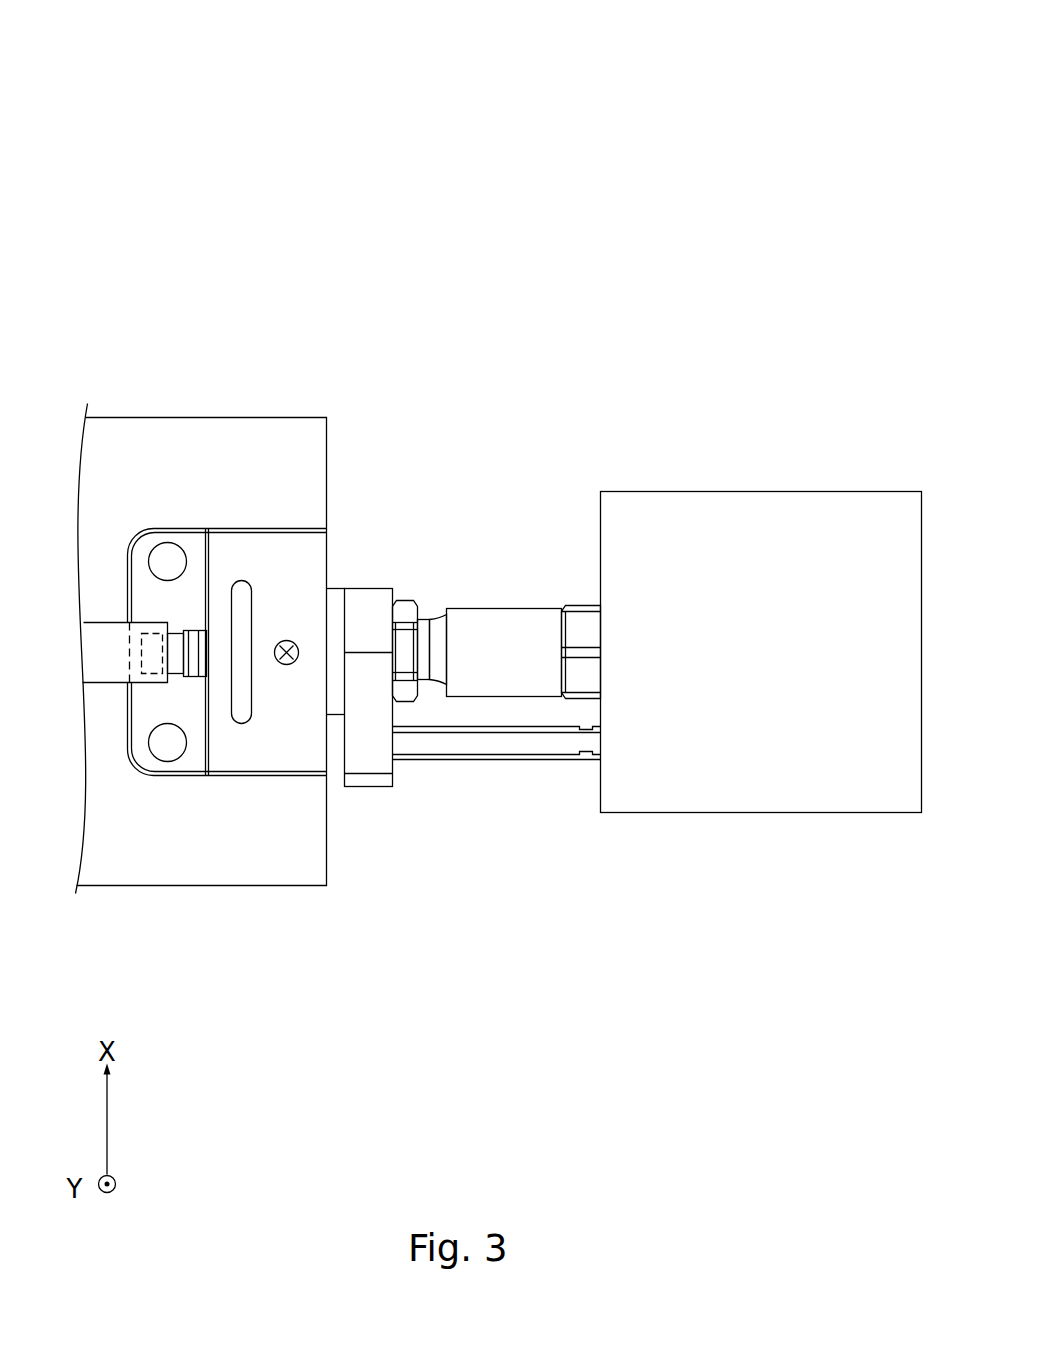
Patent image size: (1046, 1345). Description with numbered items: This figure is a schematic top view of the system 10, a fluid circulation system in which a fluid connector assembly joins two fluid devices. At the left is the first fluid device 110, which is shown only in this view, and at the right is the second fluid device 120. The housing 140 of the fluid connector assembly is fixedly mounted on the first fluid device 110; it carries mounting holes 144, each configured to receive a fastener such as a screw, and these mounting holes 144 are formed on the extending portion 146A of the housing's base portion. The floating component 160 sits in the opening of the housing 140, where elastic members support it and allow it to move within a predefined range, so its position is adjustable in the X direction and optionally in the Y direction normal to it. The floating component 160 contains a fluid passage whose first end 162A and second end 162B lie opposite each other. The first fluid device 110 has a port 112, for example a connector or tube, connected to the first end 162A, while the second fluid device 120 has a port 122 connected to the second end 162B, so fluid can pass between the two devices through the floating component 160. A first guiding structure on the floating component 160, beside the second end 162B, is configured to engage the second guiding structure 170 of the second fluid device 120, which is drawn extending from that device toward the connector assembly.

The system 10 is at (119, 49).
The first fluid device 110 is at (215, 872).
The port 112 is at (88, 655).
The second fluid device 120 is at (767, 806).
The port 122 is at (507, 616).
The housing 140 is at (278, 765).
The mounting holes 144 is at (153, 772).
The extending portion 146A is at (137, 702).
The floating component 160 is at (350, 563).
The first end 162A is at (182, 635).
The second end 162B is at (440, 624).
The second guiding structure 170 is at (487, 750).